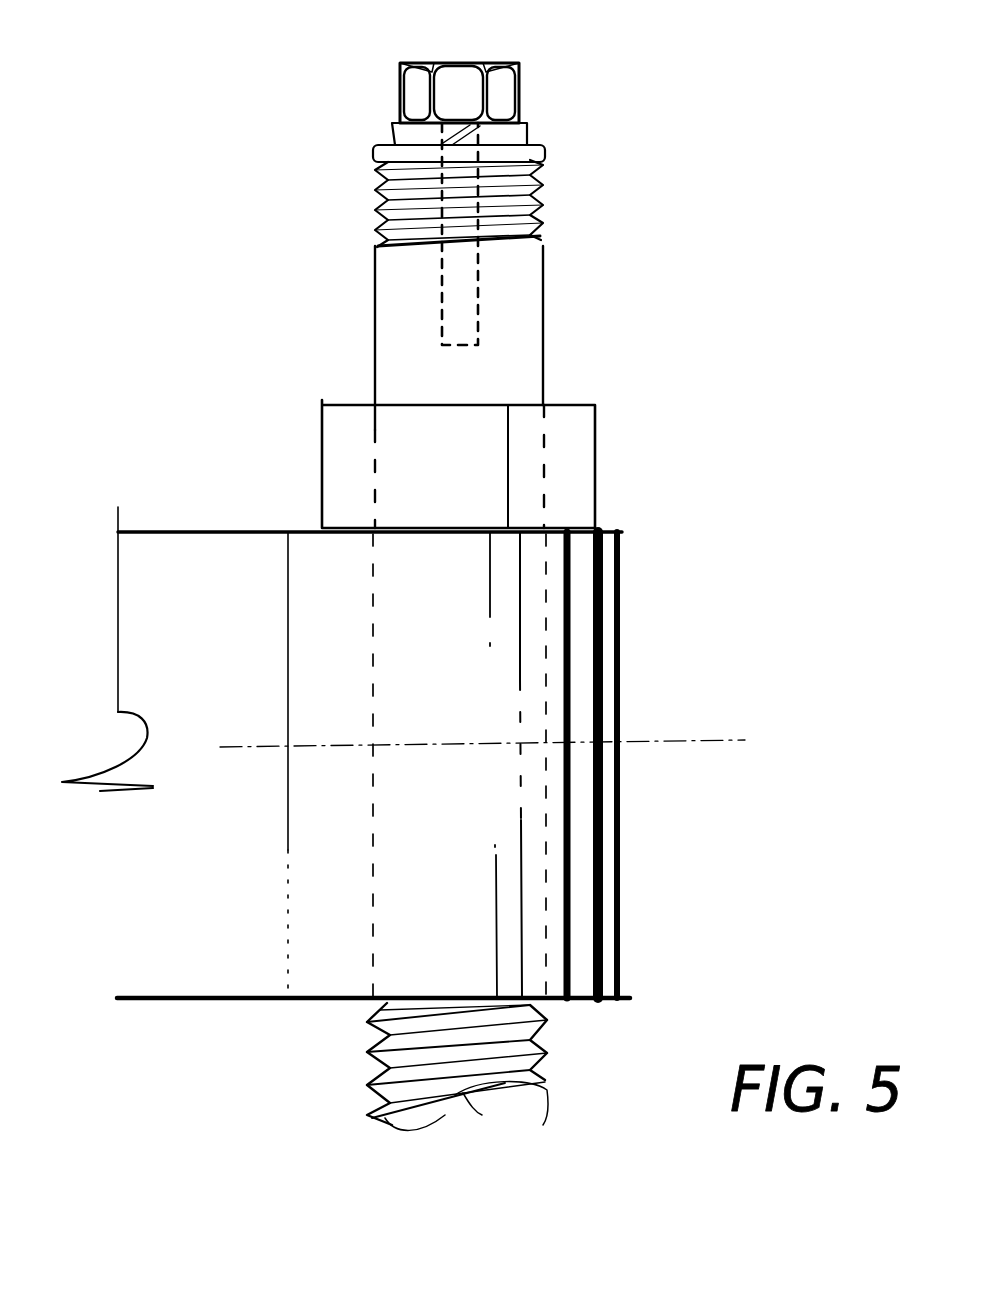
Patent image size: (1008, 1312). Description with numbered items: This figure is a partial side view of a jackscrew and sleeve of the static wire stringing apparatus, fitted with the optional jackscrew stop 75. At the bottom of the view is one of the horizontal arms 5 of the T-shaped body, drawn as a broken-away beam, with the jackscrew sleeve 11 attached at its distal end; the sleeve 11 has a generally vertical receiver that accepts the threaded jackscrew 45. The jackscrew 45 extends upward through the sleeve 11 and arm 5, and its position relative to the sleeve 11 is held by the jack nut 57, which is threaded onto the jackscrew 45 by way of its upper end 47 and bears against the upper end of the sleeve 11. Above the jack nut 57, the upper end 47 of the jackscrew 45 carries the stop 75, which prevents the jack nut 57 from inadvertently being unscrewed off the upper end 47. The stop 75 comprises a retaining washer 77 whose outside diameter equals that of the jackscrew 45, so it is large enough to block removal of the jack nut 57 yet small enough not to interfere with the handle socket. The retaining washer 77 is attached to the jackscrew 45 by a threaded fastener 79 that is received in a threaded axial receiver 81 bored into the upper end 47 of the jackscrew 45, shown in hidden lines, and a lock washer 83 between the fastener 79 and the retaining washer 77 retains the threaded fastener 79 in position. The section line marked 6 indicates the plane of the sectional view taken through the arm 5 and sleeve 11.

The jackscrew stop 75 is at (563, 74).
The threaded fastener 79 is at (400, 91).
The lock washer 83 is at (392, 134).
The retaining washer 77 is at (547, 151).
The upper end 47 is at (356, 161).
The threaded axial receiver 81 is at (462, 305).
The threaded jackscrew 45 is at (543, 345).
The jack nut 57 is at (598, 437).
The horizontal arm 5 is at (183, 531).
The jackscrew sleeve 11 is at (615, 615).
The section line 6- 6 is at (257, 863).